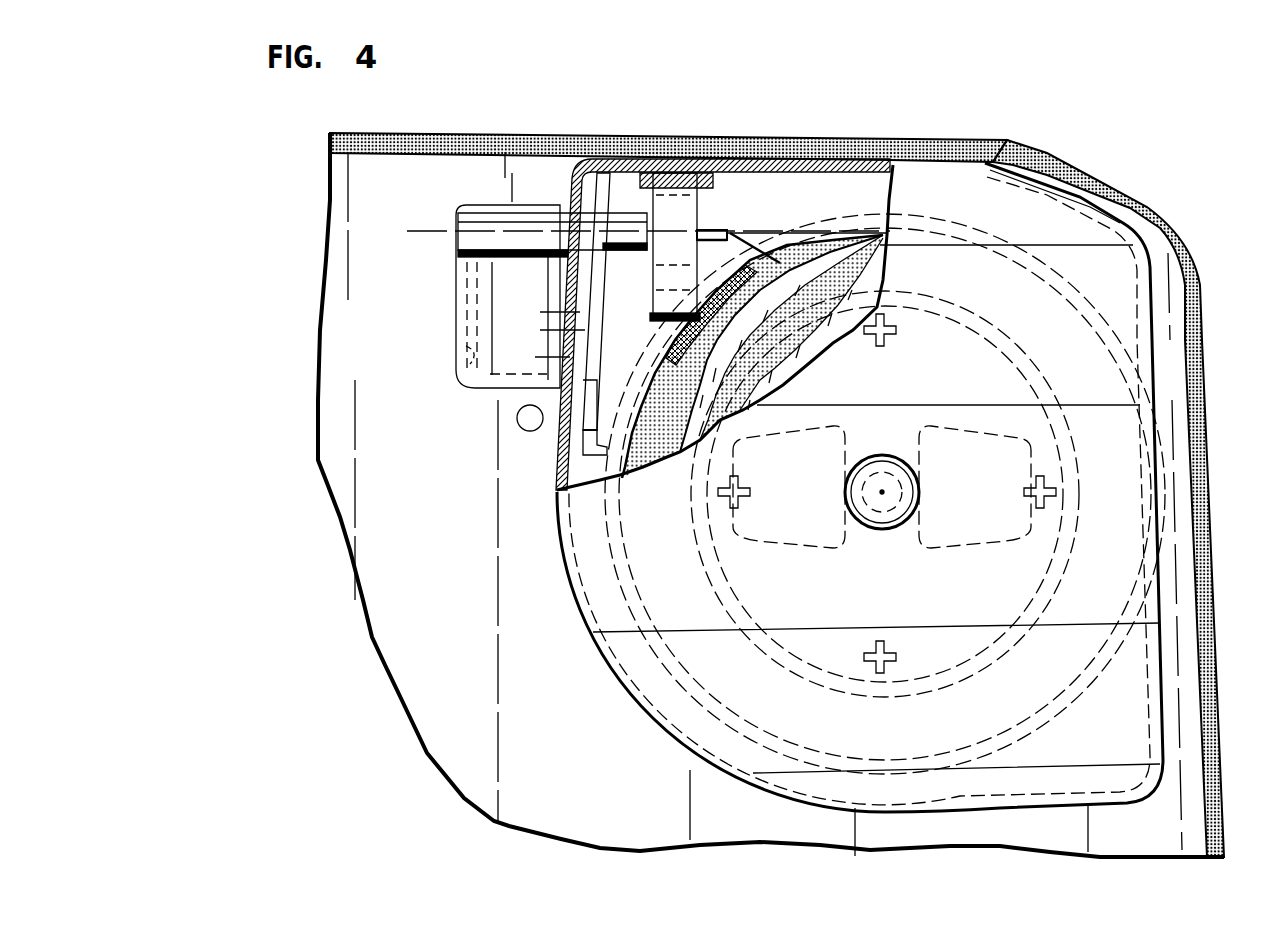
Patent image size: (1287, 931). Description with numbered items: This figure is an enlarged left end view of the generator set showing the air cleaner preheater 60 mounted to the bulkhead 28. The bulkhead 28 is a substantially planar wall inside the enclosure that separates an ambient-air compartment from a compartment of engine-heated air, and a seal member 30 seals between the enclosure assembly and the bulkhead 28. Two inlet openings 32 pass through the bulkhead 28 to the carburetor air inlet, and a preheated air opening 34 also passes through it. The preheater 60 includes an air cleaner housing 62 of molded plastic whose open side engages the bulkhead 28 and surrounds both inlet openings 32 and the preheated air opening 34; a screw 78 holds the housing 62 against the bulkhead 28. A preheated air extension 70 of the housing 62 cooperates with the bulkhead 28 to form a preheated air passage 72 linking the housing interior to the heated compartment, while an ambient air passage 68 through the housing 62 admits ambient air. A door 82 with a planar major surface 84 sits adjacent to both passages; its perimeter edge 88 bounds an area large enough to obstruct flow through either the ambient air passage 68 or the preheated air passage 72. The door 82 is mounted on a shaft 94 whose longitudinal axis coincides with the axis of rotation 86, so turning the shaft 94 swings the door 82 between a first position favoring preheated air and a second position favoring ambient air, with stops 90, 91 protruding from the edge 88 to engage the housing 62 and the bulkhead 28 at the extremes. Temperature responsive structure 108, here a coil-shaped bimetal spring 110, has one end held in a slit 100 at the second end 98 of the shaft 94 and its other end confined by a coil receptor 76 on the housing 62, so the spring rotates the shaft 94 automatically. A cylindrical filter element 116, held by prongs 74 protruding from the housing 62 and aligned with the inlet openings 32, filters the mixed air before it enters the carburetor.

The bulkhead 28 is at (417, 162).
The seal member 30 is at (546, 133).
The inlet opening 32 is at (818, 491).
The preheated air opening 34 is at (482, 350).
The preheater 60 is at (1003, 155).
The air cleaner housing 62 is at (728, 158).
The ambient air passage 68 is at (567, 357).
The preheated air extension 70 is at (455, 282).
The preheated air passage 72 is at (545, 294).
The prongs 74 is at (884, 640).
The coil receptor 76 is at (680, 172).
The screw 78 is at (886, 465).
The door 82 is at (583, 330).
The major surface 84 is at (577, 312).
The axis of rotation 86 is at (800, 233).
The edge 88 is at (594, 388).
The stop 90 is at (648, 160).
The stop 91 is at (600, 448).
The shaft 94 is at (728, 233).
The second end of shaft 98 is at (702, 248).
The slit 100 is at (780, 263).
The temperature responsive structure 108 is at (647, 316).
The bimetal spring 110 is at (696, 203).
The filter element 116 is at (910, 160).